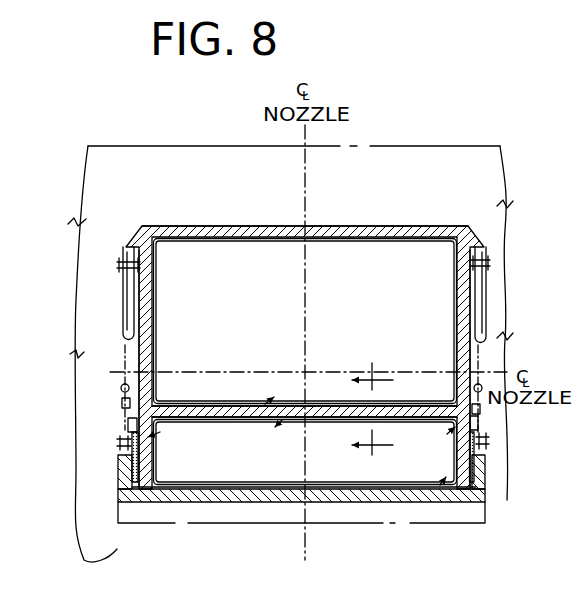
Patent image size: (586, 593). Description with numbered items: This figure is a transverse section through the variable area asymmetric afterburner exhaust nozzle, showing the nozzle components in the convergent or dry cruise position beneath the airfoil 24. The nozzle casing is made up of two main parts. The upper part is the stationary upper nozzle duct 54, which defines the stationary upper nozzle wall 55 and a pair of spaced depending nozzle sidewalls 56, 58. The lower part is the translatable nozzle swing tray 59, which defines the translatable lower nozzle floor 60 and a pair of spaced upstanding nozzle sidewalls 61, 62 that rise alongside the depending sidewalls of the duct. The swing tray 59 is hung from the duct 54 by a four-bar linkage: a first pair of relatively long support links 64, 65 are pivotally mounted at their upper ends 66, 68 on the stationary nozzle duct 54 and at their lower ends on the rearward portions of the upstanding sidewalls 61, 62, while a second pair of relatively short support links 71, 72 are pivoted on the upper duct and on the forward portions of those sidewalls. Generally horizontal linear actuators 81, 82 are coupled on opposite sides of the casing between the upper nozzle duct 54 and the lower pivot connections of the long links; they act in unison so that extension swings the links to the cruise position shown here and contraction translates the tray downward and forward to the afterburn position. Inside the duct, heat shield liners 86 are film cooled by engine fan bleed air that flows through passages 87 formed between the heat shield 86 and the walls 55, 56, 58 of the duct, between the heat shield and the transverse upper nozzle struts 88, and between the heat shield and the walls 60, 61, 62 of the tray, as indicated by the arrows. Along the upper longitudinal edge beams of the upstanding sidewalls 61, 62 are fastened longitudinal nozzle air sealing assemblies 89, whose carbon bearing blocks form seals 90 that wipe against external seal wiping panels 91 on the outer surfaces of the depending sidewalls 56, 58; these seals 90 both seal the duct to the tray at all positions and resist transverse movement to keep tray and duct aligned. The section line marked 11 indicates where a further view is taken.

The airfoil 24 is at (413, 143).
The stationary upper nozzle duct 54 is at (397, 224).
The stationary upper nozzle wall 55 is at (348, 229).
The depending nozzle sidewall 56 is at (147, 297).
The depending nozzle sidewall 58 is at (462, 297).
The translatable nozzle swing tray 59 is at (411, 526).
The translatable lower nozzle floor 60 is at (330, 504).
The upstanding nozzle sidewall 61 is at (118, 487).
The upstanding nozzle sidewall 62 is at (484, 490).
The long support link 64 is at (124, 297).
The long support link 65 is at (487, 300).
The upper end of long support link 66 is at (128, 262).
The upper end of long support link 68 is at (488, 262).
The short support link 71 is at (118, 441).
The short support link 72 is at (488, 441).
The linear actuator 81 is at (124, 383).
The linear actuator 82 is at (481, 383).
The heat shield liner 86 is at (447, 360).
The passage 87 is at (155, 357).
The transverse upper nozzle strut 88 is at (254, 408).
The longitudinal nozzle air sealing assembly 89 is at (125, 400).
The seal 90 is at (133, 430).
The external seal wiping panel 91 is at (133, 463).
The section line 11- 11 is at (372, 409).